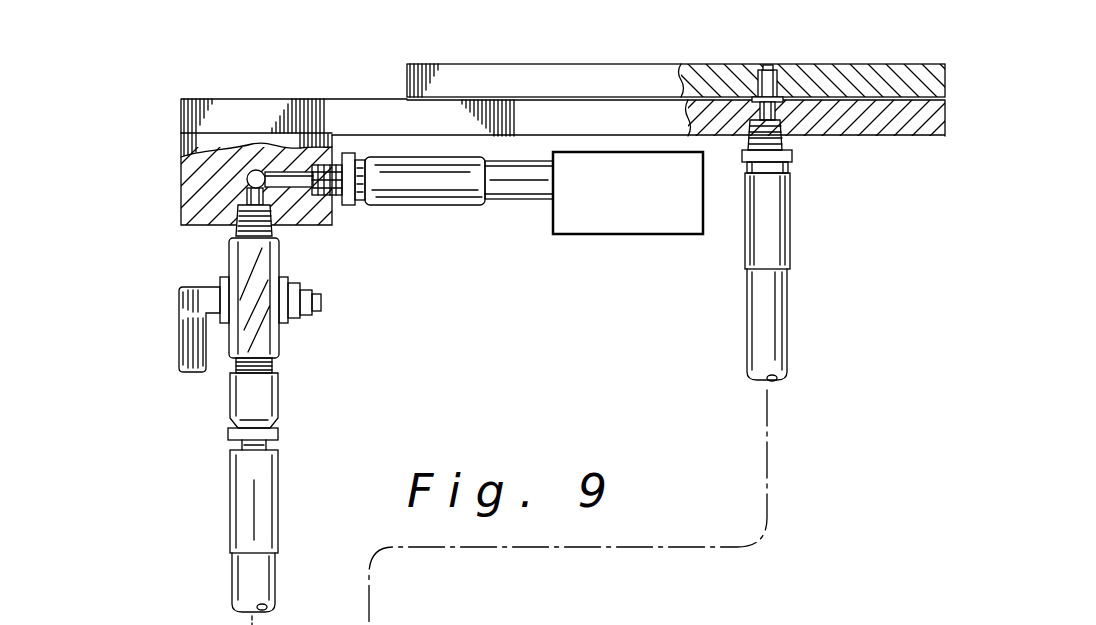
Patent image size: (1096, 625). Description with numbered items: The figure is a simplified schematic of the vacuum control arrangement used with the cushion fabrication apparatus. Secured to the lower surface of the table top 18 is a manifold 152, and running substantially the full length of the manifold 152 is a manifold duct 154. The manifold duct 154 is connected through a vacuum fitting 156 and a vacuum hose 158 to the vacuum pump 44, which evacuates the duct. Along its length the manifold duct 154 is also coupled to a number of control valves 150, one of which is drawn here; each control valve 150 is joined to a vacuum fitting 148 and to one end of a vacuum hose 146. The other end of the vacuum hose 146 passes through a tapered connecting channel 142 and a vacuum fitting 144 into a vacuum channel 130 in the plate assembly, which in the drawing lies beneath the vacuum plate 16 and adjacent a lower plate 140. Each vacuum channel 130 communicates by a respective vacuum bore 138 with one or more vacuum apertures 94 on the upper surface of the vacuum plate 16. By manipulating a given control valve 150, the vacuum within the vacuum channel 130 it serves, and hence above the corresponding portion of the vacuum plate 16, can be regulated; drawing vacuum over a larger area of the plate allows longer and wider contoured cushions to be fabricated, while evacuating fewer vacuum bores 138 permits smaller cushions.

The vacuum plate 16 is at (505, 82).
The table top 18 is at (248, 118).
The vacuum pump 44 is at (635, 235).
The vacuum apertures 94 is at (766, 65).
The vacuum channel 130 is at (783, 95).
The vacuum bore 138 is at (770, 85).
The lower plate 140 is at (618, 99).
The tapered connecting channel 142 is at (781, 143).
The vacuum fitting 144 is at (792, 220).
The vacuum hose 146 is at (788, 312).
The vacuum fitting 148 is at (282, 458).
The control valve 150 is at (281, 258).
The manifold 152 is at (181, 208).
The manifold duct 154 is at (254, 180).
The vacuum fitting 156 is at (397, 207).
The vacuum hose 158 is at (517, 200).